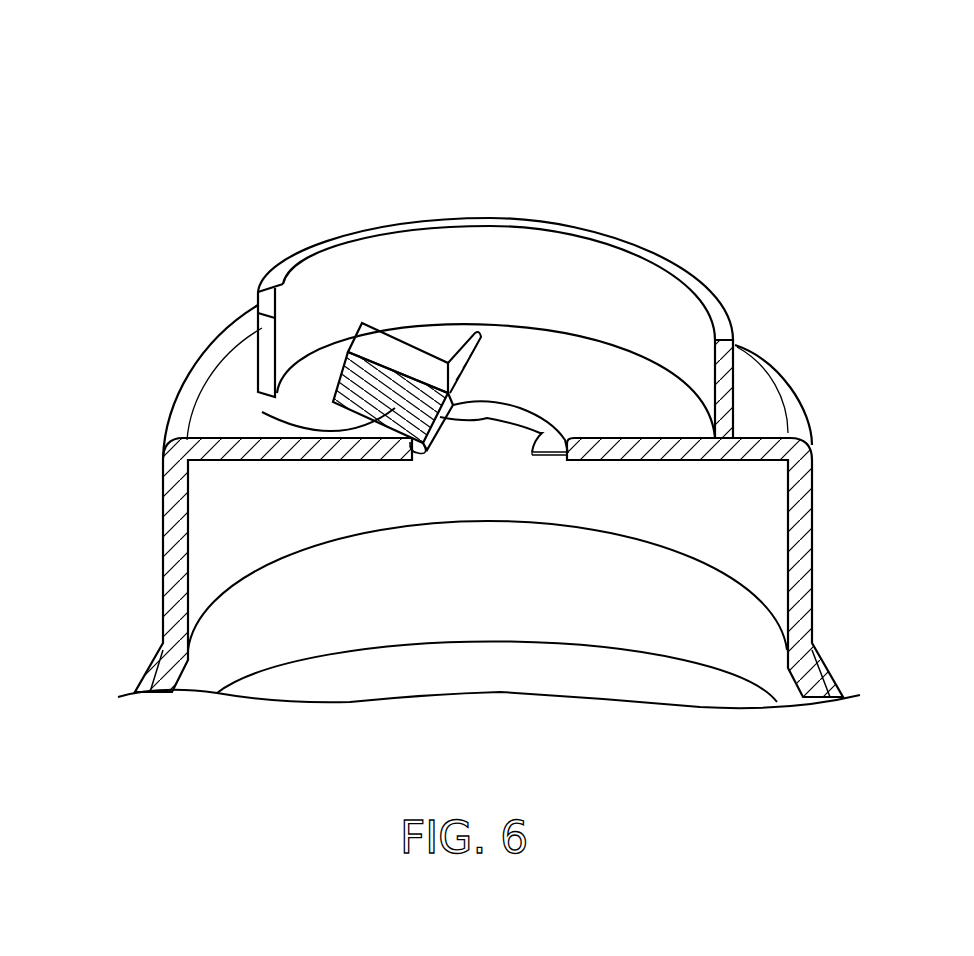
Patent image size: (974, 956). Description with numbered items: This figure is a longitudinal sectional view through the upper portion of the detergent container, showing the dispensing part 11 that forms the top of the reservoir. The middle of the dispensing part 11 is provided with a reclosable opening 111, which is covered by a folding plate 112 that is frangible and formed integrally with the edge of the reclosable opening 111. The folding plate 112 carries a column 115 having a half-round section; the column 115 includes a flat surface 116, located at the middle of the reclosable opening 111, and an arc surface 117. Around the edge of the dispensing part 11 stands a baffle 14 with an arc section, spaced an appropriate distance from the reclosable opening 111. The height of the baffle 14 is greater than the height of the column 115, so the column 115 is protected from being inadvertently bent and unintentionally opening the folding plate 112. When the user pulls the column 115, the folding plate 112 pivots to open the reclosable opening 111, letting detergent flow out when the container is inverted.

The dispensing part 11 is at (757, 407).
The baffle 14 is at (428, 277).
The reclosable opening 111 is at (497, 440).
The folding plate 112 is at (463, 350).
The column 115 is at (350, 350).
The flat surface 116 is at (388, 353).
The arc surface 117 is at (262, 412).